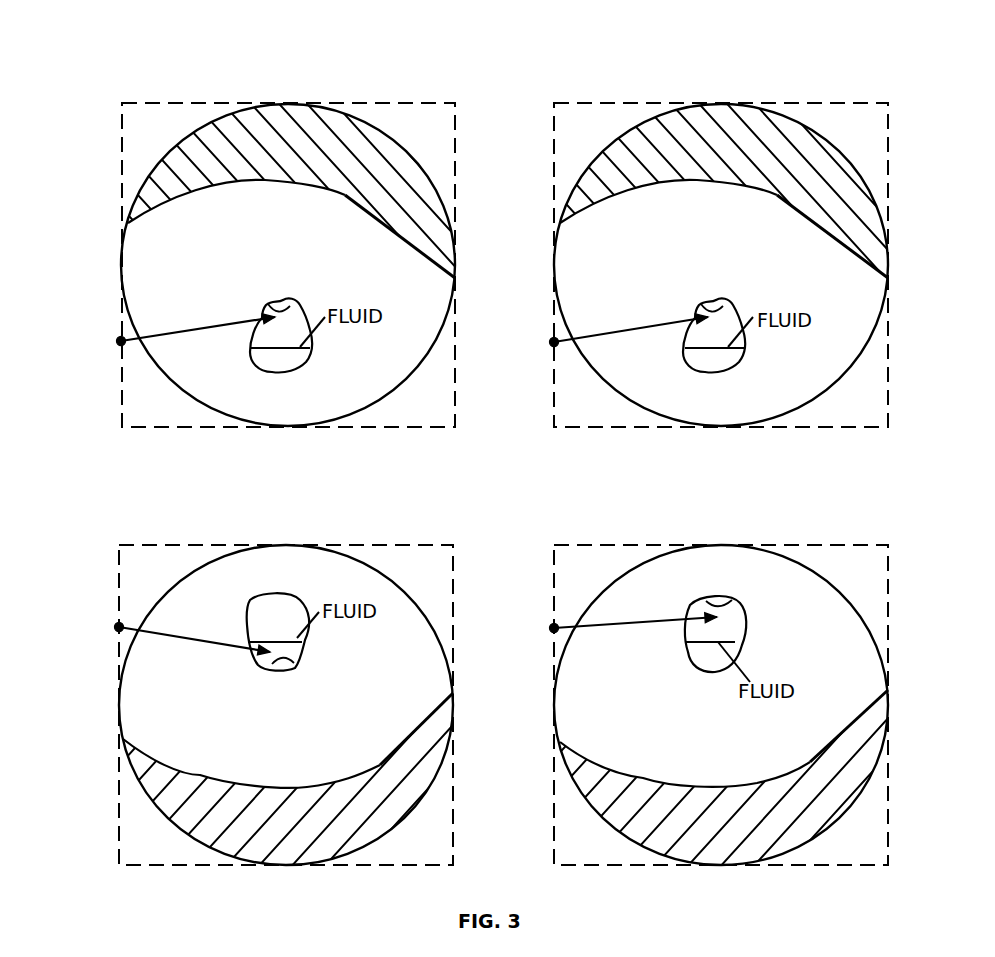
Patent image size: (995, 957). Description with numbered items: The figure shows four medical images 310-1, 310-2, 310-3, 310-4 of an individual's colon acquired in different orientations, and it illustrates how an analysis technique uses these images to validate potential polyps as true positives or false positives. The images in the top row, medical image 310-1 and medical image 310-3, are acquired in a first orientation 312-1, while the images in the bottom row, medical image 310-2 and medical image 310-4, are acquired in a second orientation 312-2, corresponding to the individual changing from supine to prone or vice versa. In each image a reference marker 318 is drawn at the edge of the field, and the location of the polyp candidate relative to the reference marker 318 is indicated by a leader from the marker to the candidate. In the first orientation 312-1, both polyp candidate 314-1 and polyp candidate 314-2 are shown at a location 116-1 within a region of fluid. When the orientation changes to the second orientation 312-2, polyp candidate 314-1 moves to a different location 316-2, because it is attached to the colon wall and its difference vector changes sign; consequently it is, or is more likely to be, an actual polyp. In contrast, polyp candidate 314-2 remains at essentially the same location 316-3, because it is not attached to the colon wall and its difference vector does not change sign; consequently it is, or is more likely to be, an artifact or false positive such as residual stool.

The medical image 310-1 is at (180, 57).
The medical image 310-2 is at (172, 497).
The medical image 310-3 is at (603, 57).
The medical image 310-4 is at (603, 497).
The orientation 312-1 is at (497, 248).
The orientation 312-2 is at (497, 685).
The polyp candidate 314-1 is at (325, 675).
The polyp candidate 314-2 is at (767, 623).
The location 116-1 is at (200, 330).
The location 316-2 is at (205, 641).
The location 316-3 is at (638, 623).
The reference marker 318 is at (554, 628).